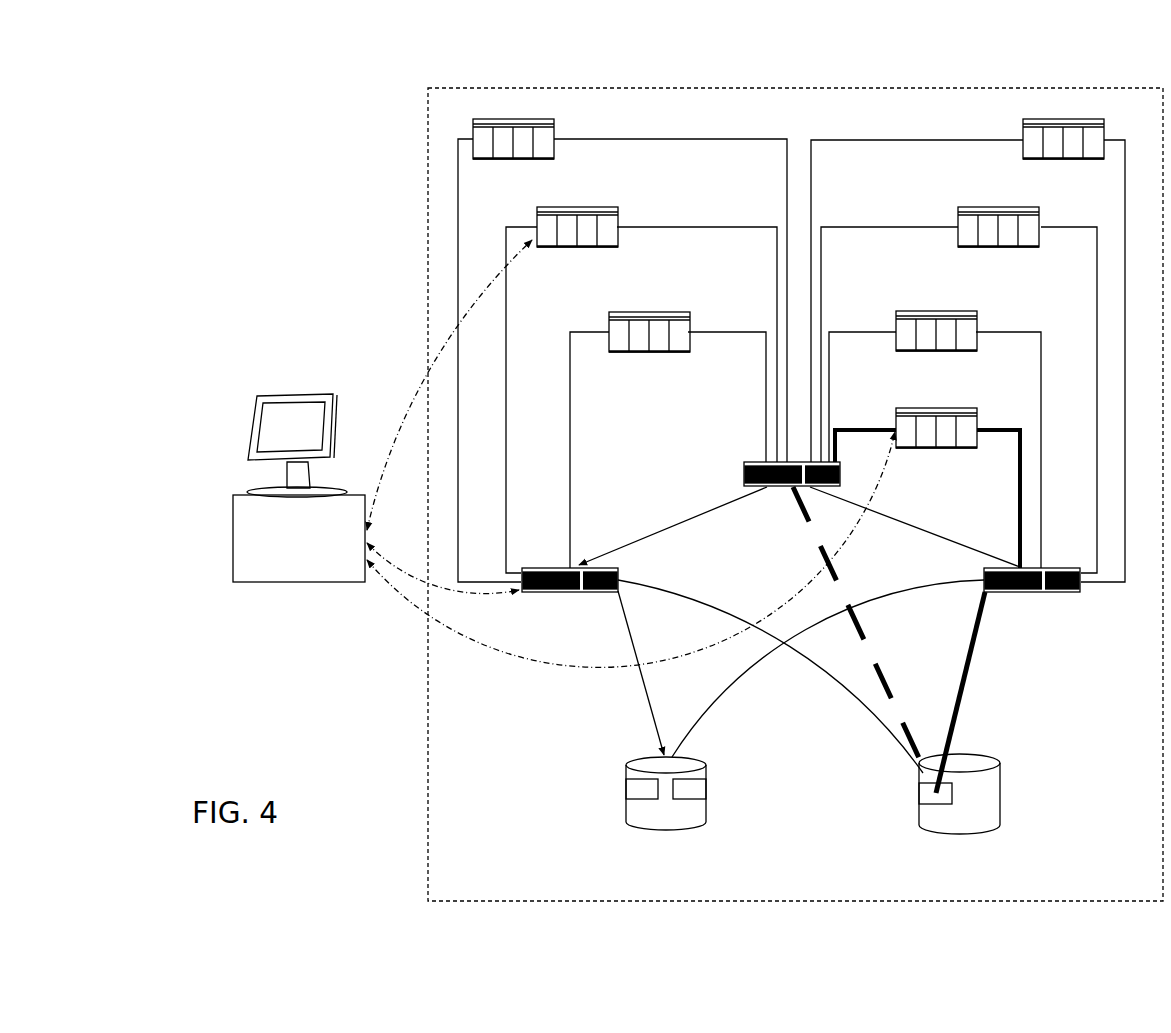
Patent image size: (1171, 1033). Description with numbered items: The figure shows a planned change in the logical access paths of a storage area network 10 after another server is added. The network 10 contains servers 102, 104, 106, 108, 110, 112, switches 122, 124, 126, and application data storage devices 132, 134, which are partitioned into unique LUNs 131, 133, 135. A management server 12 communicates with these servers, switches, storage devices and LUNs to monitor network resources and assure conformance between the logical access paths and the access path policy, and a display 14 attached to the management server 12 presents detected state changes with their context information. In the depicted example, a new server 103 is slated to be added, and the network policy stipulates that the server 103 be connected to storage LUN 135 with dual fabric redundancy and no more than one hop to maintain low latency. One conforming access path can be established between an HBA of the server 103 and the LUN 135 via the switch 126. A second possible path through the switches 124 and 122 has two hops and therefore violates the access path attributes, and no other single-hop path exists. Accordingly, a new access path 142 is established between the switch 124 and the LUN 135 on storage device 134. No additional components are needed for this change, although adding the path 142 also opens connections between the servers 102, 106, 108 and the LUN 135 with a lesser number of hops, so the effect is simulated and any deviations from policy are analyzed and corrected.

The network 10 is at (426, 836).
The management server 12 is at (233, 539).
The display 14 is at (285, 395).
The server 102 is at (556, 153).
The new server 103 is at (897, 408).
The server 104 is at (897, 313).
The server 106 is at (618, 241).
The server 108 is at (689, 343).
The server 110 is at (1017, 157).
The server 112 is at (958, 208).
The switch 122 is at (545, 591).
The switch 124 is at (753, 461).
The switch 126 is at (1067, 597).
The LUN 131 is at (638, 787).
The storage device 132 is at (624, 815).
The LUN 133 is at (697, 788).
The storage device 134 is at (1002, 810).
The LUN 135 is at (921, 795).
The access path 142 is at (820, 553).